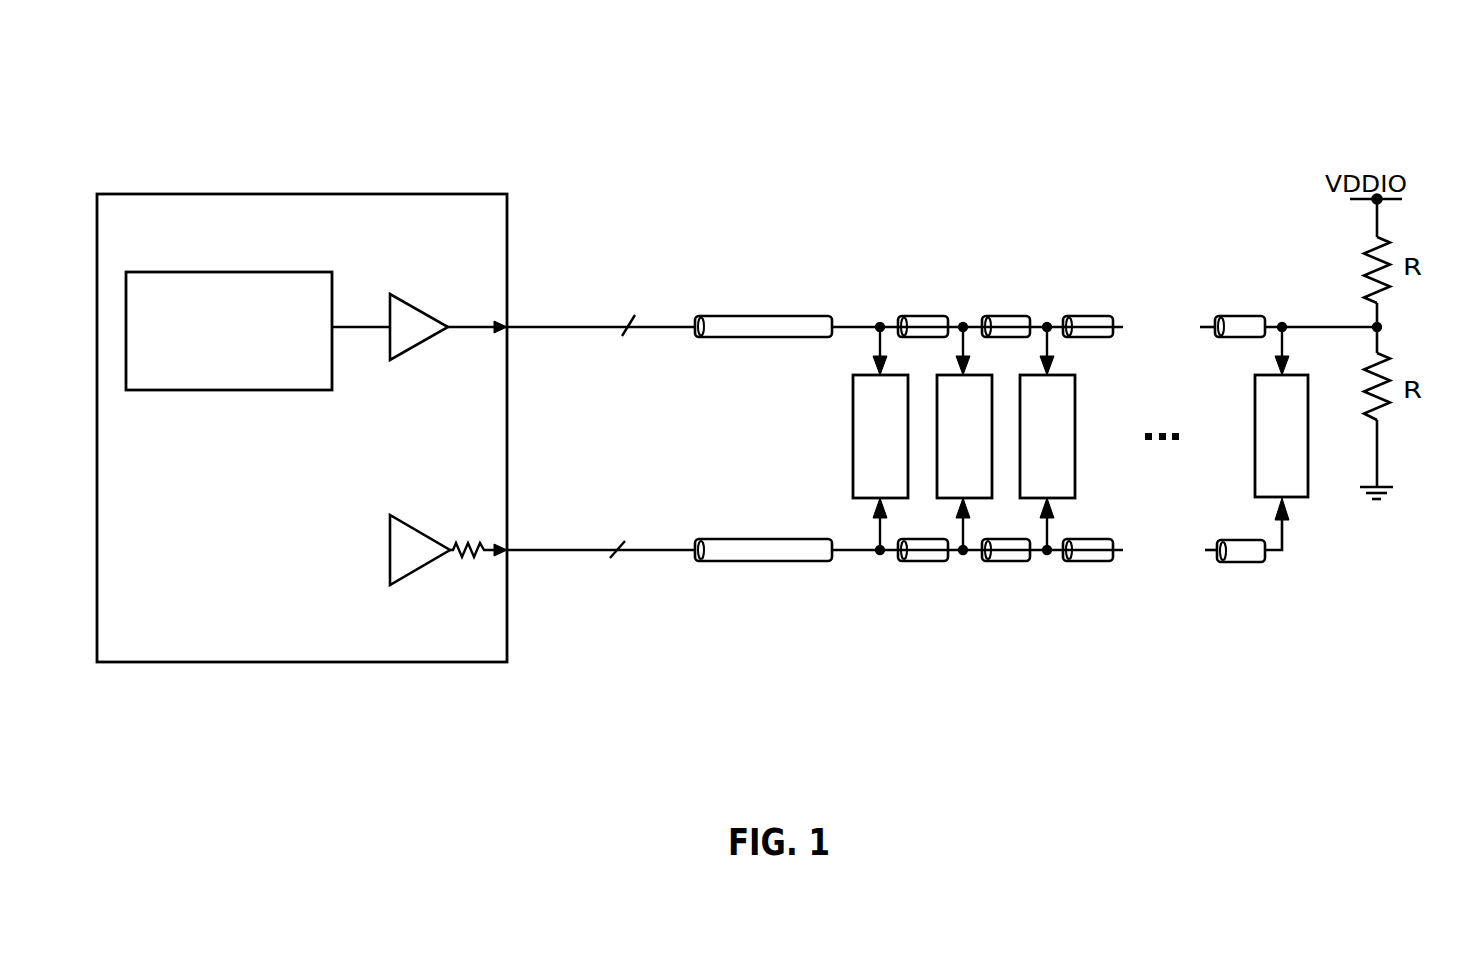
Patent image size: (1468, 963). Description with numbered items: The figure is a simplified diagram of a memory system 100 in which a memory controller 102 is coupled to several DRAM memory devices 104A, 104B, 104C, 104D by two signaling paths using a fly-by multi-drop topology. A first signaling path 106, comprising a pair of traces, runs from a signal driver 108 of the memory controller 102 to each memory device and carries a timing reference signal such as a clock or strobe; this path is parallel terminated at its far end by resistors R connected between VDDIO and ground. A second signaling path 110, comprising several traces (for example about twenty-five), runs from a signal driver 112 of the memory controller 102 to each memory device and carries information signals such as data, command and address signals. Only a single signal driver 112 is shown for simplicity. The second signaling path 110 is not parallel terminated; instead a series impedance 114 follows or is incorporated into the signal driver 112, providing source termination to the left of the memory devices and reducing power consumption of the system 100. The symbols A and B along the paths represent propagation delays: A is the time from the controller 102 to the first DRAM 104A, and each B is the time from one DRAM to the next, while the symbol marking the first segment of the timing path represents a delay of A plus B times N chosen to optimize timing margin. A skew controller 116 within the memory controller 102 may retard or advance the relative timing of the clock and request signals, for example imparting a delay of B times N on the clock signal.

The memory system 100 is at (794, 49).
The memory controller 102 is at (302, 428).
The DRAM memory device 104A is at (853, 428).
The DRAM memory device 104B is at (945, 498).
The DRAM memory device 104C is at (1075, 404).
The DRAM memory device 104D is at (1308, 497).
The first signaling path 106 is at (567, 327).
The signal driver 108 is at (405, 297).
The second signaling path 110 is at (663, 551).
The signal driver 112 is at (405, 520).
The series impedance 114 is at (458, 556).
The skew controller 116 is at (229, 331).